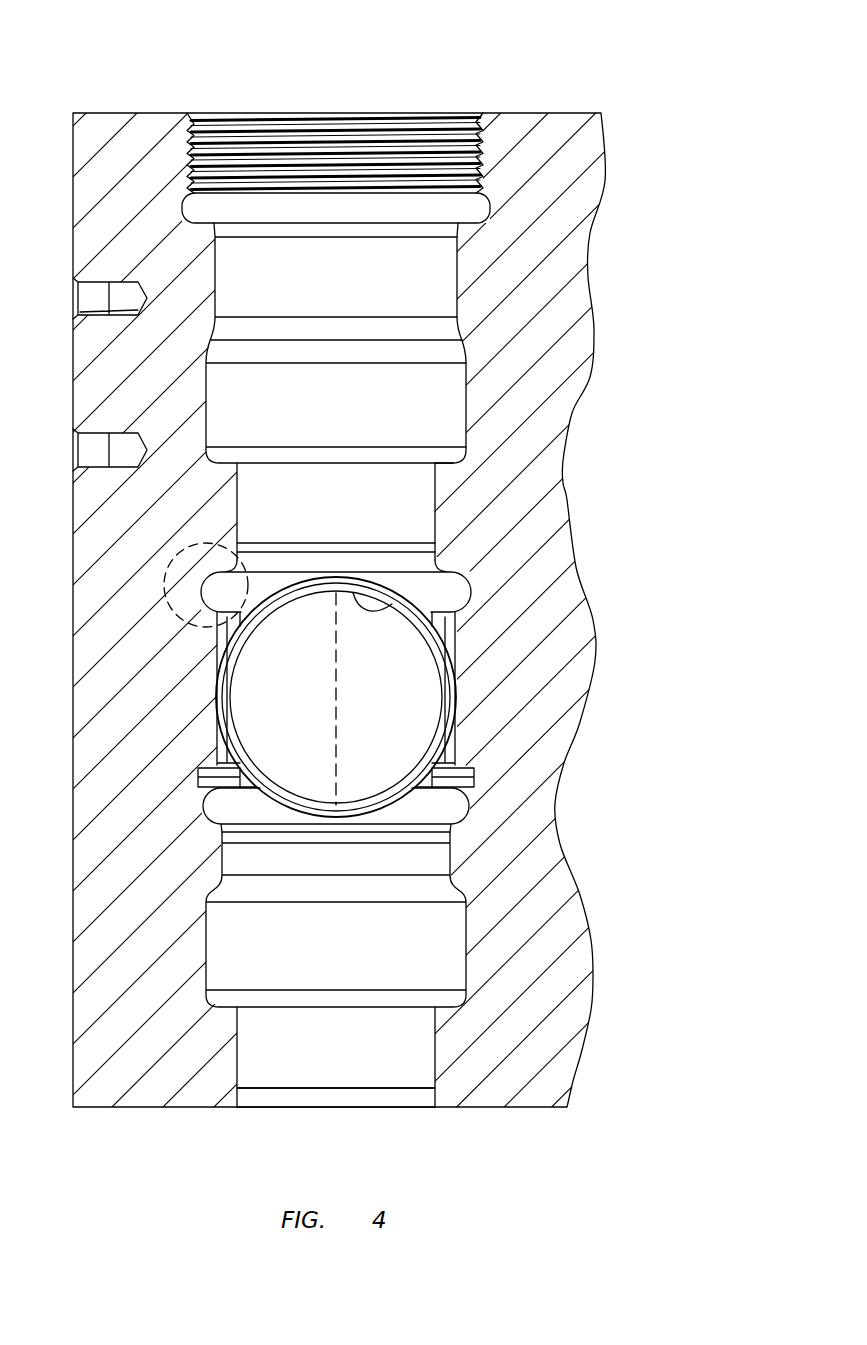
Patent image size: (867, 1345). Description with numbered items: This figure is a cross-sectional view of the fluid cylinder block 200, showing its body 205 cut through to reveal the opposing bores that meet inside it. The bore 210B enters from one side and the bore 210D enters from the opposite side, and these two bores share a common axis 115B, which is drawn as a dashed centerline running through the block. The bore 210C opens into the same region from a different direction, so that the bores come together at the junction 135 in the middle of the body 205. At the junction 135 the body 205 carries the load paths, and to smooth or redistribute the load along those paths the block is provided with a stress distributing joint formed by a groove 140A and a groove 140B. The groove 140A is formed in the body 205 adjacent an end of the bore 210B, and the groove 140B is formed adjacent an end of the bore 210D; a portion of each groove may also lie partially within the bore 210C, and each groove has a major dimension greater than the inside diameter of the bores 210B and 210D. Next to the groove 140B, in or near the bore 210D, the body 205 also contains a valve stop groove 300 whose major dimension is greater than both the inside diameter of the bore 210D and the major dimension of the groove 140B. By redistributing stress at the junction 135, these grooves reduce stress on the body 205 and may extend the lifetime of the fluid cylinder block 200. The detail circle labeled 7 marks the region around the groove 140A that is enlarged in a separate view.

The fluid cylinder block 200 is at (371, 88).
The body 205 is at (588, 118).
The bore 210B is at (218, 125).
The bore 210C is at (357, 606).
The bore 210D is at (432, 1063).
The groove 140A is at (470, 598).
The groove 140B is at (473, 807).
The junction 135 is at (412, 706).
The valve stop groove 300 is at (478, 779).
The common axis 115B is at (336, 706).
The detail circle 7 is at (175, 556).